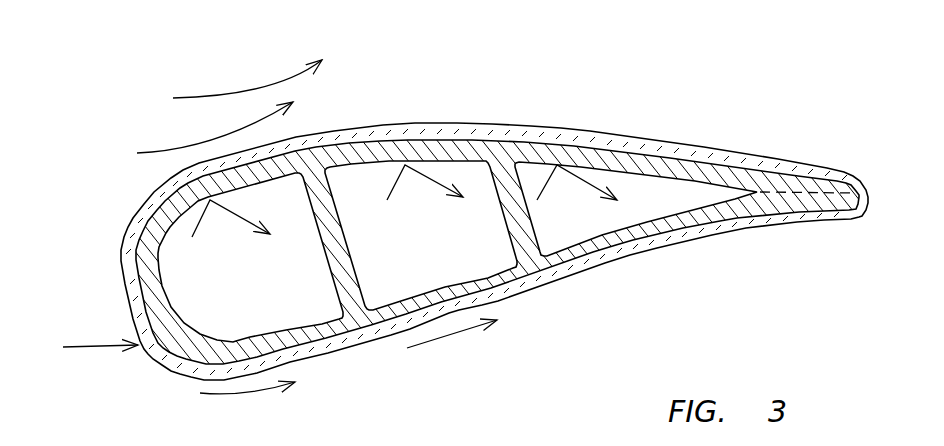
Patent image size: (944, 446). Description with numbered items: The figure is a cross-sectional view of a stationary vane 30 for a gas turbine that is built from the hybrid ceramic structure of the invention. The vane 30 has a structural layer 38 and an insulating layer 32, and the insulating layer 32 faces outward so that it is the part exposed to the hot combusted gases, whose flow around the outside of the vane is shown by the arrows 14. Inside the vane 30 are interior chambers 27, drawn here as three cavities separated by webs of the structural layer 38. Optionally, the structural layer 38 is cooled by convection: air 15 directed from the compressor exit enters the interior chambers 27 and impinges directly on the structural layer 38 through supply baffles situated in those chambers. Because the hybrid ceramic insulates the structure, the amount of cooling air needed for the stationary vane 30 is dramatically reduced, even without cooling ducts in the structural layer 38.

The arrows 14 is at (240, 88).
The air 15 is at (192, 237).
The interior chambers 27 is at (190, 270).
The stationary vane 30 is at (472, 241).
The insulating layer 32 is at (472, 241).
The structural layer 38 is at (607, 243).